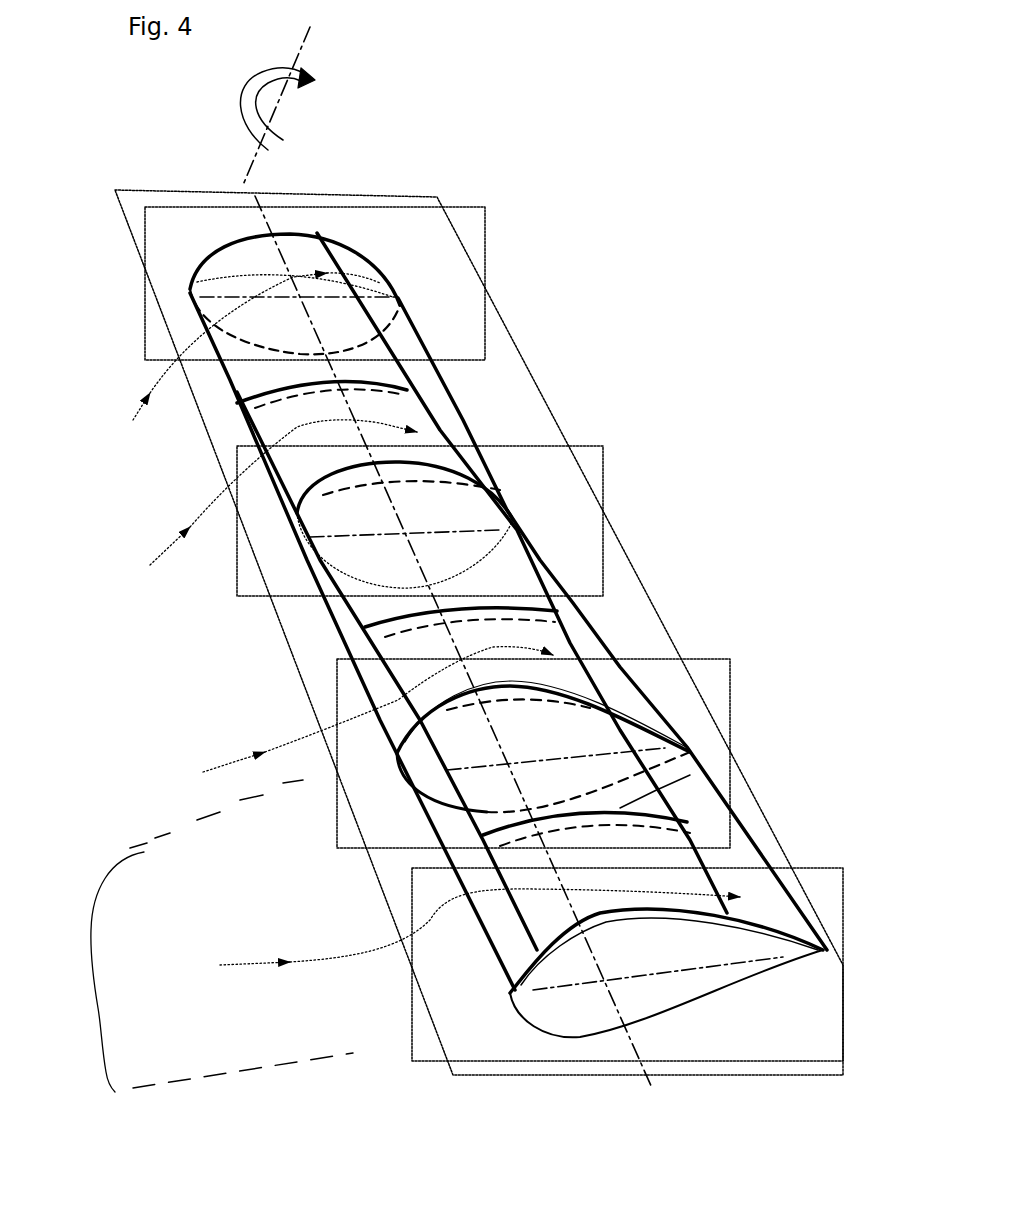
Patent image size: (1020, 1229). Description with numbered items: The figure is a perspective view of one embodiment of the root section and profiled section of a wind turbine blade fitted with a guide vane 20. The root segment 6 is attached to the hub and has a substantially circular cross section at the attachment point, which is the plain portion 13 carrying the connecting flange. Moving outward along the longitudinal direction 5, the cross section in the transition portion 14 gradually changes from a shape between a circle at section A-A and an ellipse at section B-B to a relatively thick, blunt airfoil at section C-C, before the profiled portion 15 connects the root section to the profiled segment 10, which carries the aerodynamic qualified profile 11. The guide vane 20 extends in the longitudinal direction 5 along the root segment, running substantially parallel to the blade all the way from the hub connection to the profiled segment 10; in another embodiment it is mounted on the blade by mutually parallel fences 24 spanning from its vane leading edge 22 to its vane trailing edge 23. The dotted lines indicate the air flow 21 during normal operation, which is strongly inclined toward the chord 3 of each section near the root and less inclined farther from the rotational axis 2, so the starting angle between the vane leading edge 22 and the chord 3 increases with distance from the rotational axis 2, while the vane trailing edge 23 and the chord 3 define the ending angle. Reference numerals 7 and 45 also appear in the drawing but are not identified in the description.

The rotational axis 2 is at (297, 57).
The chord 3 is at (363, 285).
The longitudinal direction 5 is at (263, 217).
The root segment 6 is at (458, 870).
The trailing edge region 7 is at (678, 825).
The profiled segment 10 is at (448, 641).
The aerodynamic qualified profile 11 is at (673, 940).
The plain portion 13 is at (118, 345).
The transition portion 14 is at (145, 525).
The profiled portion 15 is at (149, 705).
The guide vane 20 is at (345, 625).
The air flow 21 is at (428, 632).
The vane leading edge 22 is at (415, 717).
The vane trailing edge 23 is at (565, 652).
The fence 24 is at (405, 385).
The flow direction indicator 45 is at (183, 817).